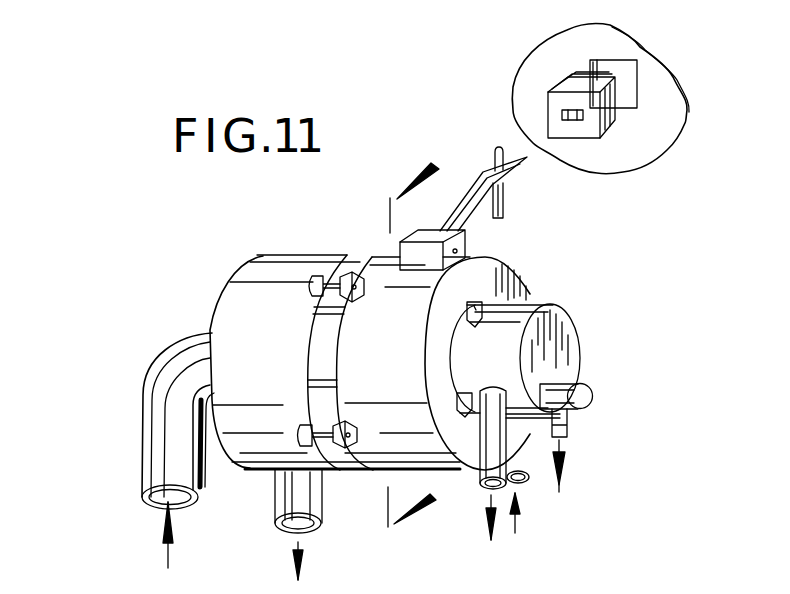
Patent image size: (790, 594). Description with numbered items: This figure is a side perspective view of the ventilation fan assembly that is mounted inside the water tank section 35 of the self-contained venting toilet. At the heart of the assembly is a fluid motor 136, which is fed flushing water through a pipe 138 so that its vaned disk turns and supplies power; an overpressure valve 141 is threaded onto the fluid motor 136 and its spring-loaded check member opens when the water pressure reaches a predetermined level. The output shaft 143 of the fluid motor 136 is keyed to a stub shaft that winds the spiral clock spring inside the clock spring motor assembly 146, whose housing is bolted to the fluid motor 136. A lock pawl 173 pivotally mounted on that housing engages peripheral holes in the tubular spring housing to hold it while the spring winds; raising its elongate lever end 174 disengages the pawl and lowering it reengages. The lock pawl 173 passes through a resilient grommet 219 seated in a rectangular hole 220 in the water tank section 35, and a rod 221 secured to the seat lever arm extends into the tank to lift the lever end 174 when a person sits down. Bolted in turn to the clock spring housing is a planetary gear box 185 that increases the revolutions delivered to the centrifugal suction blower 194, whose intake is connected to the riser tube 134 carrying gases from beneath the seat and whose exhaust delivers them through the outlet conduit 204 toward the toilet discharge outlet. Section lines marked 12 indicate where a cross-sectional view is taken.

The section line 12- 12 is at (398, 354).
The water tank section 35 is at (520, 77).
The riser tube 134 is at (143, 415).
The fluid motor 136 is at (580, 269).
The pipe 138 is at (527, 481).
The overpressure valve 141 is at (613, 377).
The output shaft of fluid motor 143 is at (480, 488).
The clock spring motor assembly 146 is at (517, 232).
The lock pawl 173 is at (458, 207).
The lever end 174 is at (514, 167).
The planetary gear box 185 is at (336, 234).
The centrifugal suction blower 194 is at (223, 309).
The outlet conduit 204 is at (280, 497).
The resilient grommet 219 is at (615, 122).
The rectangular hole 220 is at (614, 70).
The rod 221 is at (494, 153).